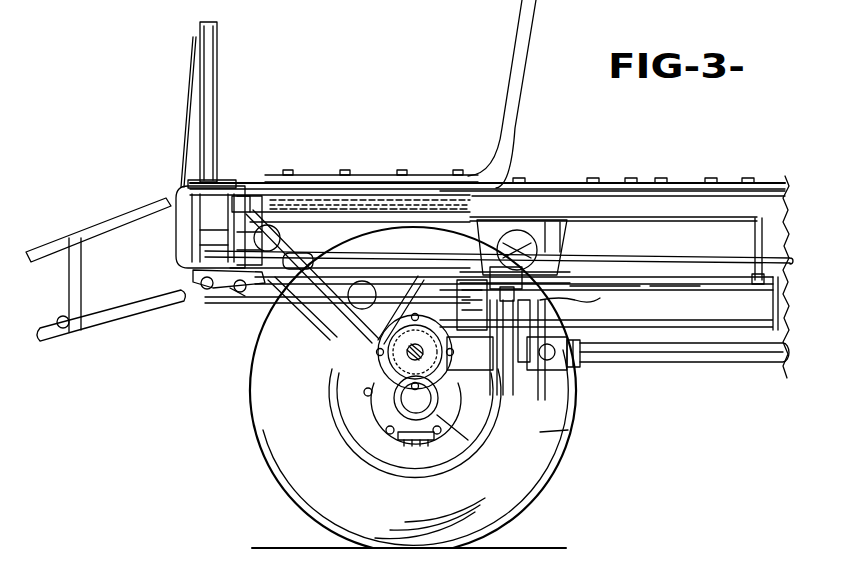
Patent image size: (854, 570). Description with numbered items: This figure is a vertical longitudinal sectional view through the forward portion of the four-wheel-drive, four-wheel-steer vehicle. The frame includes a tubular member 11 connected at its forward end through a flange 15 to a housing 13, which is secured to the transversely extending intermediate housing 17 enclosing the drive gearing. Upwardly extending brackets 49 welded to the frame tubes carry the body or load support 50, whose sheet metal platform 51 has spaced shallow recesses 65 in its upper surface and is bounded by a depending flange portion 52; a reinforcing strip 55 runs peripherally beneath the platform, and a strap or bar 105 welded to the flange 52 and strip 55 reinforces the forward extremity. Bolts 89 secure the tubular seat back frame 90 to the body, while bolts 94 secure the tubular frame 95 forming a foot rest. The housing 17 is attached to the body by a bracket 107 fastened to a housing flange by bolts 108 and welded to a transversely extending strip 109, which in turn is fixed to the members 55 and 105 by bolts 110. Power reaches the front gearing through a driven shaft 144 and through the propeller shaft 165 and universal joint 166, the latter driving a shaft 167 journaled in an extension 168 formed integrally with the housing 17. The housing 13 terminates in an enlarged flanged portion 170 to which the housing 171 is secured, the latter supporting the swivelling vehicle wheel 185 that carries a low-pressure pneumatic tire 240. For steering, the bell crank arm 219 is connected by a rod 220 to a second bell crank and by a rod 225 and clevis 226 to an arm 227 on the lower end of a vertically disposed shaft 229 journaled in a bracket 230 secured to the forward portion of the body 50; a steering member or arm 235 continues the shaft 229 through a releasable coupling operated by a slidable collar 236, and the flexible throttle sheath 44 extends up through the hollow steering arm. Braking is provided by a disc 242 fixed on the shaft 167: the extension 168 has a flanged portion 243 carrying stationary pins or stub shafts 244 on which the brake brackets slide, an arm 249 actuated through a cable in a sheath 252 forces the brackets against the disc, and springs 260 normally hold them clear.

The tubular frame member 11 is at (760, 328).
The housing 13 is at (428, 278).
The flange 15 is at (468, 276).
The intermediate housing 17 is at (385, 362).
The flexible sheath 44 is at (692, 250).
The bracket 49 is at (562, 238).
The body or load support 50 is at (621, 173).
The sheet metal platform 51 is at (542, 180).
The flange portion 52 is at (232, 185).
The reinforcing strip 55 is at (300, 187).
The shallow recesses 65 is at (570, 182).
The bolts 89 is at (457, 169).
The tubular seat back frame 90 is at (530, 37).
The bolts 94 is at (347, 175).
The tubular frame 95 is at (112, 332).
The strap or bar 105 is at (262, 185).
The bracket 107 is at (280, 300).
The bolts 108 is at (356, 330).
The transversely extending strip 109 is at (200, 232).
The bolts 110 is at (252, 180).
The driven shaft 144 is at (407, 352).
The propeller shaft 165 is at (660, 357).
The universal joint 166 is at (557, 388).
The shaft 167 is at (440, 400).
The extension 168 is at (440, 408).
The enlarged flanged portion 170 is at (434, 436).
The housing 171 is at (462, 448).
The vehicle wheel 185 is at (375, 472).
The arm of bell crank 219 is at (522, 247).
The rod 220 is at (750, 279).
The rod 225 is at (234, 288).
The clevis 226 is at (232, 290).
The arm 227 is at (192, 279).
The vertically disposed shaft 229 is at (180, 256).
The bracket 230 is at (190, 202).
The steering member or arm 235 is at (199, 82).
The collar 236 is at (190, 170).
The tires 240 is at (548, 480).
The disc 242 is at (587, 431).
The flanged portion 243 is at (470, 325).
The stationary pins or stub shafts 244 is at (590, 313).
The arm 249 is at (660, 280).
The sheath 252 is at (375, 253).
The springs 260 is at (572, 282).